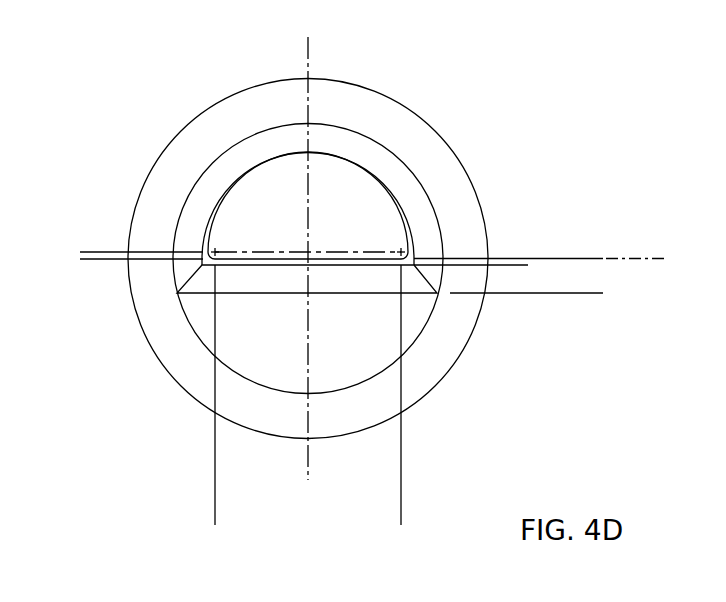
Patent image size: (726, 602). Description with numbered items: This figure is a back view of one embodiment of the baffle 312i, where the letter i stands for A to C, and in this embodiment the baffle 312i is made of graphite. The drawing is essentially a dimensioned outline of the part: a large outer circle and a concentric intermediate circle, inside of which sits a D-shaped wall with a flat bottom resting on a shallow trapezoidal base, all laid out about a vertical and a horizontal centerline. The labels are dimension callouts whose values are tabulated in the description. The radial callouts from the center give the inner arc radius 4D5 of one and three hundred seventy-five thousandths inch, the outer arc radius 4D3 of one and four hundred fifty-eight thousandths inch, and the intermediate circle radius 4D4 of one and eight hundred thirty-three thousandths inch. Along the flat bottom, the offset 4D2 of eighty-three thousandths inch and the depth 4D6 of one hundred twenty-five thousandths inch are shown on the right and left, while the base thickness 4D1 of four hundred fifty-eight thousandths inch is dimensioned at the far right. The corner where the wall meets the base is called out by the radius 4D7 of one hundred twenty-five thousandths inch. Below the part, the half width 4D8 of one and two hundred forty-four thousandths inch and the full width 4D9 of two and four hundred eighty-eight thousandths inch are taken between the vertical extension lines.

The baffle 312i is at (422, 98).
The dimension 4D1 is at (587, 223).
The dimension 4D2 is at (511, 300).
The dimension 4D3 is at (308, 258).
The dimension 4D4 is at (308, 258).
The dimension 4D5 is at (308, 258).
The dimension 4D6 is at (88, 295).
The radius dimension 4D7 is at (238, 311).
The dimension 4D8 is at (433, 465).
The dimension 4D9 is at (401, 508).